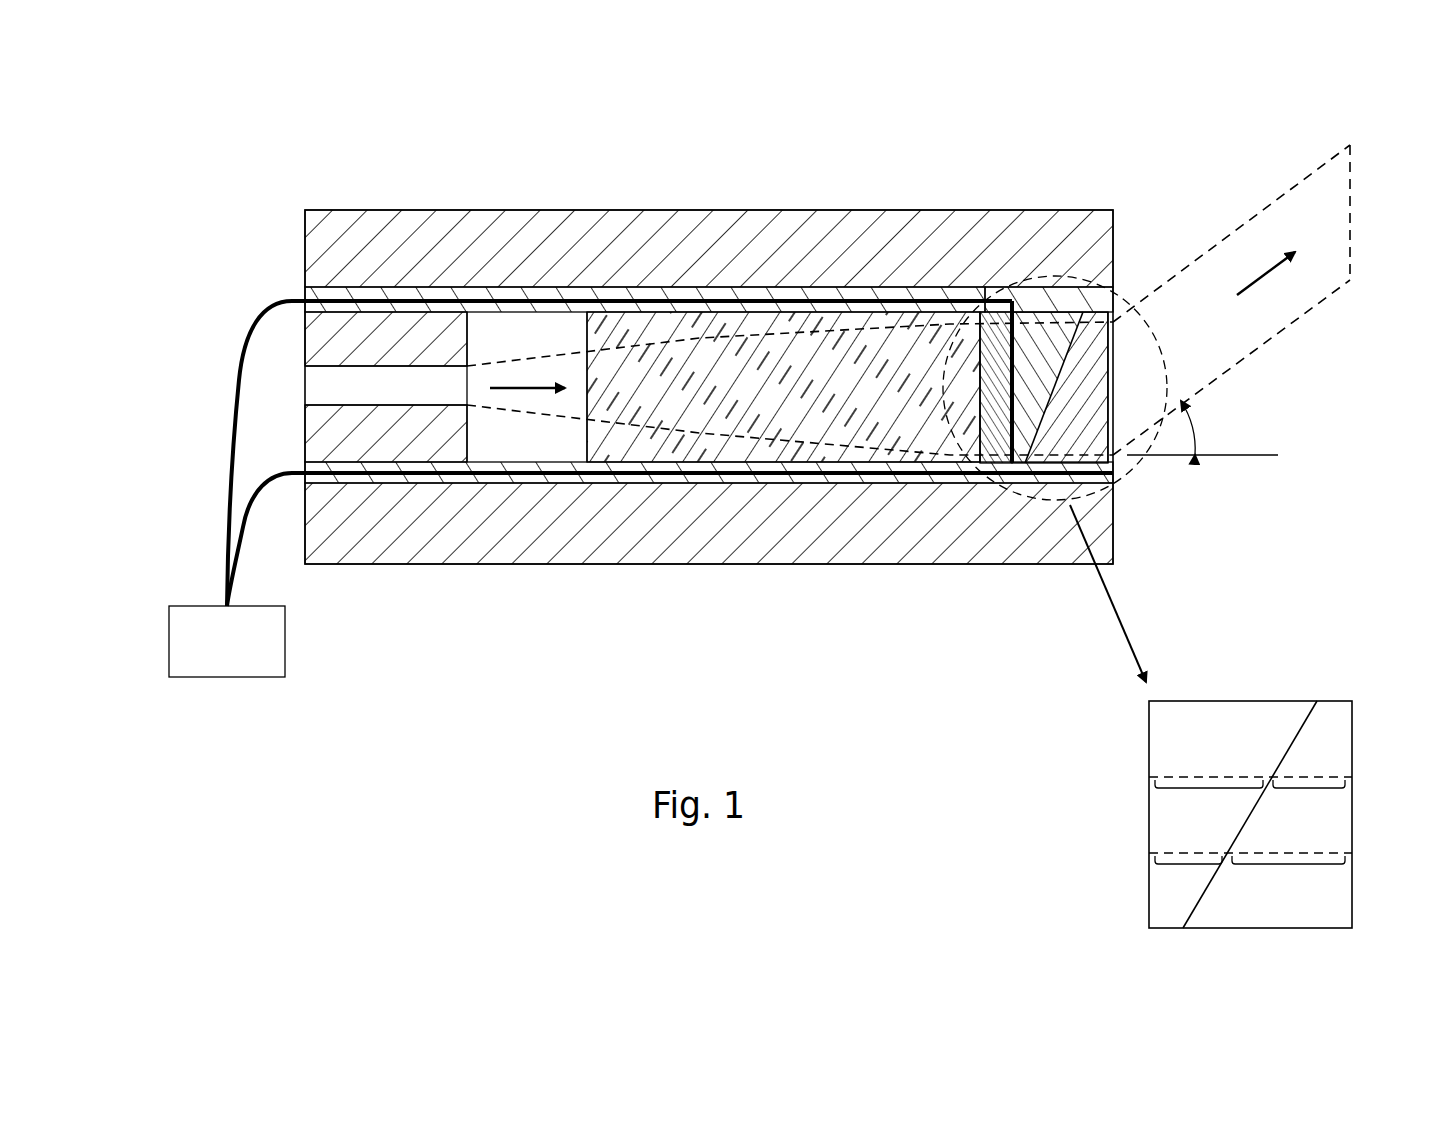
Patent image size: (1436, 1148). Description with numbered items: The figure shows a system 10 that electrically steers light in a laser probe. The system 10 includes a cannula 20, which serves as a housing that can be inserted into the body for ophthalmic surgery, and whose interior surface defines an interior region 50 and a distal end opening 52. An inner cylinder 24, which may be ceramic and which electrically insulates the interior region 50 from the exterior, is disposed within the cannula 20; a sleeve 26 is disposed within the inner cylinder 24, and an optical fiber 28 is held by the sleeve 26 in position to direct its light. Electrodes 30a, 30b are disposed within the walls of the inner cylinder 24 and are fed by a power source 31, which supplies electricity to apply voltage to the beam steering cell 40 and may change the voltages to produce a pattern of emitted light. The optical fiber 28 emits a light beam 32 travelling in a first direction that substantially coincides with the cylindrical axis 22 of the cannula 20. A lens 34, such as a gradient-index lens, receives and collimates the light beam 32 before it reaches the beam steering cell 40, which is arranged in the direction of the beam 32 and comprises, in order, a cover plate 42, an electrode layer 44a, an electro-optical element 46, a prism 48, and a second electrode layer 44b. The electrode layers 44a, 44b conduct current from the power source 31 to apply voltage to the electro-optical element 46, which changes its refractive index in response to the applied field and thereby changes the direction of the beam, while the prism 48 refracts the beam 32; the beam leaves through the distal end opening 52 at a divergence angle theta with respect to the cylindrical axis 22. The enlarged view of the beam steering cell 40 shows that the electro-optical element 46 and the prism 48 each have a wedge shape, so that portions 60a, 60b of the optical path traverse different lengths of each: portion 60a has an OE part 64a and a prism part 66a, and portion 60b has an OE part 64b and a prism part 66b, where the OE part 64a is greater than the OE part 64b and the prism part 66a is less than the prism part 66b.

The system 10 is at (435, 143).
The cannula 20 is at (682, 210).
The cylindrical axis 22 is at (1235, 456).
The inner cylinder 24 is at (690, 483).
The sleeve 26 is at (305, 432).
The optical fiber 28 is at (305, 387).
The electrode 30a is at (355, 300).
The electrode 30b is at (390, 475).
The power source 31 is at (235, 678).
The light beam 32 is at (525, 360).
The lens 34 is at (620, 312).
The beam steering cell 40 is at (1113, 348).
The cover plate 42 is at (980, 343).
The electrode layer 44a is at (995, 340).
The electrode layer 44b is at (1113, 335).
The electro-optical element 46 is at (1037, 312).
The prism 48 is at (1113, 522).
The interior region 50 is at (541, 450).
The distal end opening 52 is at (1113, 398).
The portion of optical path 60a is at (1190, 777).
The portion of optical path 60b is at (1183, 853).
The OE part 64a is at (1215, 788).
The OE part 64b is at (1190, 865).
The prism part 66a is at (1310, 788).
The prism part 66b is at (1290, 865).